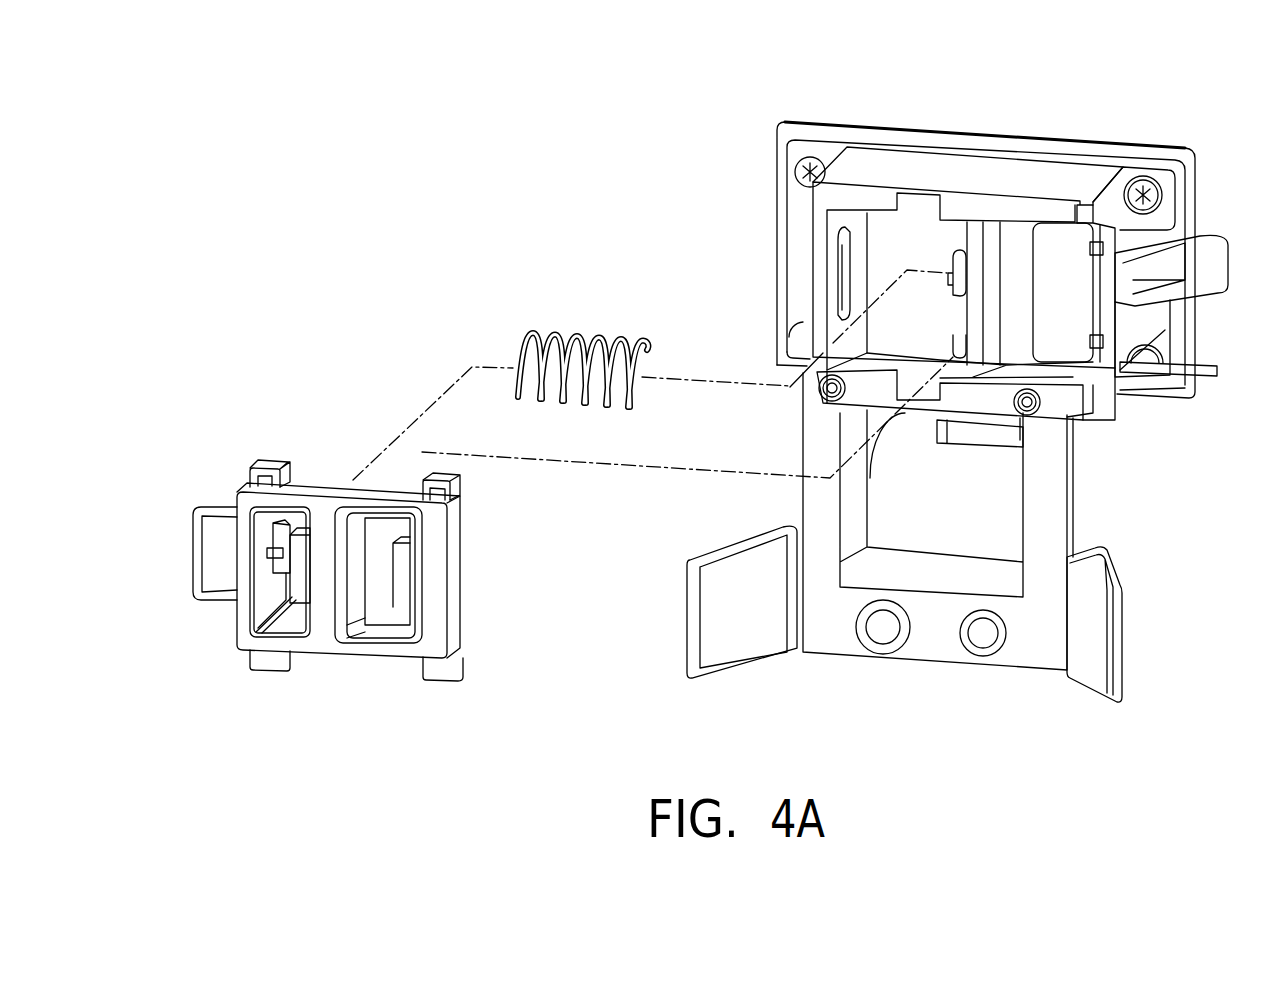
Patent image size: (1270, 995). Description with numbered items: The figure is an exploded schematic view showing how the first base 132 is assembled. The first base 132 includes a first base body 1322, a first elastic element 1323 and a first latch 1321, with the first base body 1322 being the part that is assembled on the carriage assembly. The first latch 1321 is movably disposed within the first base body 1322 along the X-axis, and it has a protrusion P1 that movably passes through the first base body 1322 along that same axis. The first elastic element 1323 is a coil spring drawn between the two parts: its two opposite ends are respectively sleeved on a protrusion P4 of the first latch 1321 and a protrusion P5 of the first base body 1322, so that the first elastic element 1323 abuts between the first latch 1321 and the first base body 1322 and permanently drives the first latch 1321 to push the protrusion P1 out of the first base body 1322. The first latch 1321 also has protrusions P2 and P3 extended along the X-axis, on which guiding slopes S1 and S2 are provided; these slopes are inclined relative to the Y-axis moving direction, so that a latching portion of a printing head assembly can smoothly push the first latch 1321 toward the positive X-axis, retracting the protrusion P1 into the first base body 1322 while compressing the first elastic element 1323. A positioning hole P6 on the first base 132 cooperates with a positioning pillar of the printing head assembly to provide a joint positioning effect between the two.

The first base 132 is at (1023, 237).
The first latch 1321 is at (326, 579).
The first base body 1322 is at (904, 576).
The first elastic element 1323 is at (533, 312).
The protrusion P1 is at (210, 560).
The protrusion P2 is at (303, 578).
The protrusion P3 is at (410, 575).
The protrusion P4 is at (284, 528).
The protrusion P5 is at (955, 262).
The positioning hole P6 is at (980, 635).
The guiding slope S1 is at (294, 600).
The guiding slope S2 is at (392, 605).